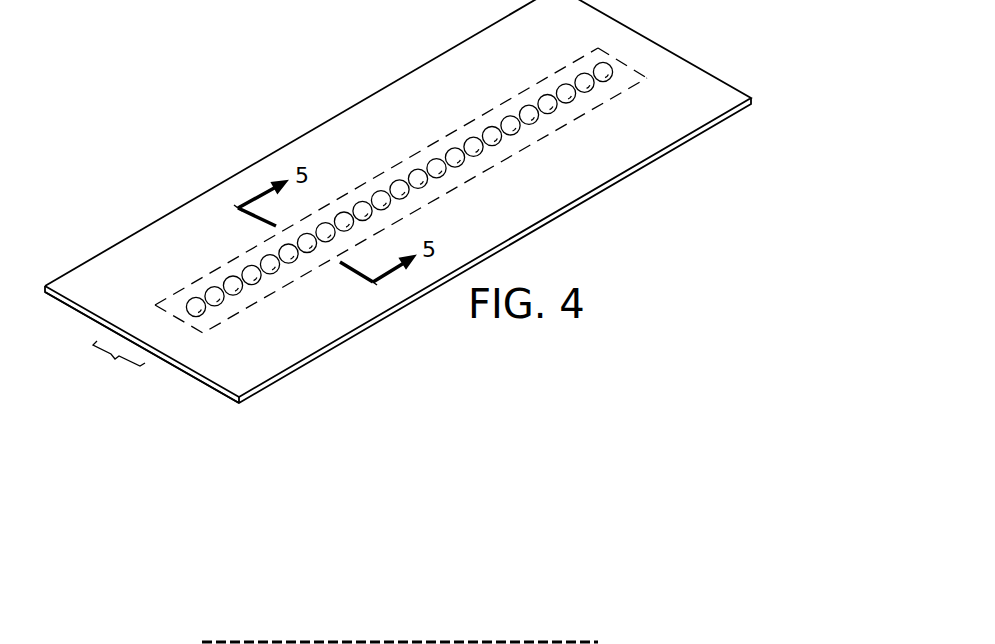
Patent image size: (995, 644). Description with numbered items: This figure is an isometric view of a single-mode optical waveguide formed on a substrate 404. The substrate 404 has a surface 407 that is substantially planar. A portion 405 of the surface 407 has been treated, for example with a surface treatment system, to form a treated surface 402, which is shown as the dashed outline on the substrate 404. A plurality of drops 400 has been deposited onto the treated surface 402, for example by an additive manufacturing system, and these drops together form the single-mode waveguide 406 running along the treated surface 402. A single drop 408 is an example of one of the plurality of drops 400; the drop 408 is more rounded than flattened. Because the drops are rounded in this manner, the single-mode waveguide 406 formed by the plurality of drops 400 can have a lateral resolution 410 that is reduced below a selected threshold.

The plurality of drops 400 is at (399, 189).
The treated surface 402 is at (424, 172).
The substrate 404 is at (398, 201).
The portion of surface 405 is at (645, 57).
The single-mode waveguide 406 is at (512, 92).
The surface 407 is at (267, 164).
The drop 408 is at (229, 277).
The lateral resolution 410 is at (142, 347).